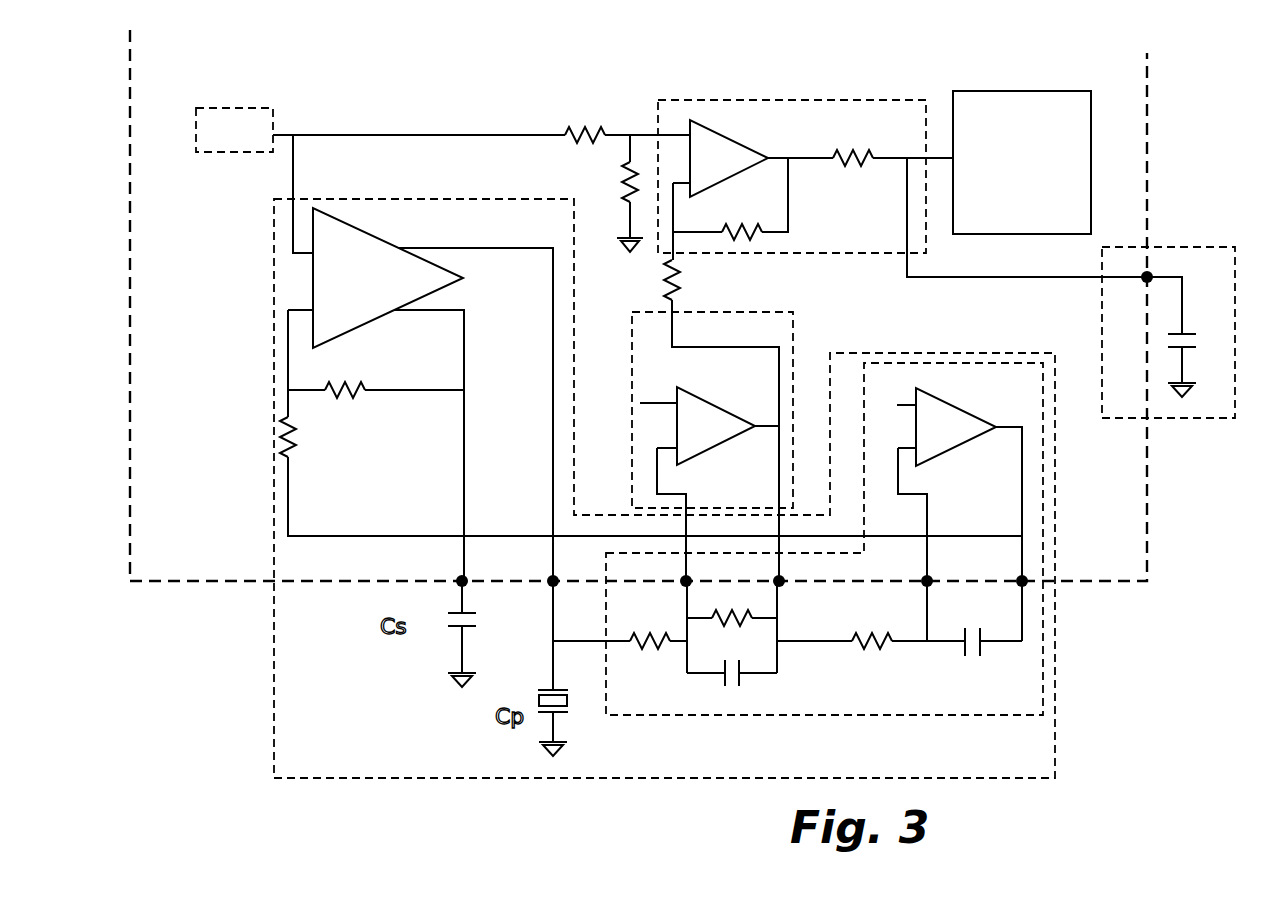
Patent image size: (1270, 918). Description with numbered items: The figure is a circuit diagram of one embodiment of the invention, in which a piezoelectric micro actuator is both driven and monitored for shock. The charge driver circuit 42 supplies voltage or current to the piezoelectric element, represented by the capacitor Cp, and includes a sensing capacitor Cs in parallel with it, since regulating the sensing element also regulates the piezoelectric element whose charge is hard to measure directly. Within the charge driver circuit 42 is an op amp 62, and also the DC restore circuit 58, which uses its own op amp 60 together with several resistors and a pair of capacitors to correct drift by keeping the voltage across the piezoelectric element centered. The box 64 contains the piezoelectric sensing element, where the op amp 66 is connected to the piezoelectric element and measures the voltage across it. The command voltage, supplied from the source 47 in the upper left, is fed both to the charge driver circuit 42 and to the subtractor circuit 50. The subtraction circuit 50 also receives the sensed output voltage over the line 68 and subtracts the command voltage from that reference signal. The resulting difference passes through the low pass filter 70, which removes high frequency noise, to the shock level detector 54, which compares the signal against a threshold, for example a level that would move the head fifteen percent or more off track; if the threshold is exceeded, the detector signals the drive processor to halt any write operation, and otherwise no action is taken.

The charge driver circuit 42 is at (275, 692).
The control voltage source Vc 47 is at (262, 108).
The subtractor circuit 50 is at (812, 100).
The shock level detector 54 is at (1052, 100).
The DC restore circuit 58 is at (640, 655).
The op amp 60 is at (950, 422).
The op amp 62 is at (375, 257).
The piezoelectric sensing element 64 is at (642, 333).
The op amp 66 is at (715, 418).
The reference signal line 68 is at (680, 287).
The low pass filter 70 is at (1178, 262).